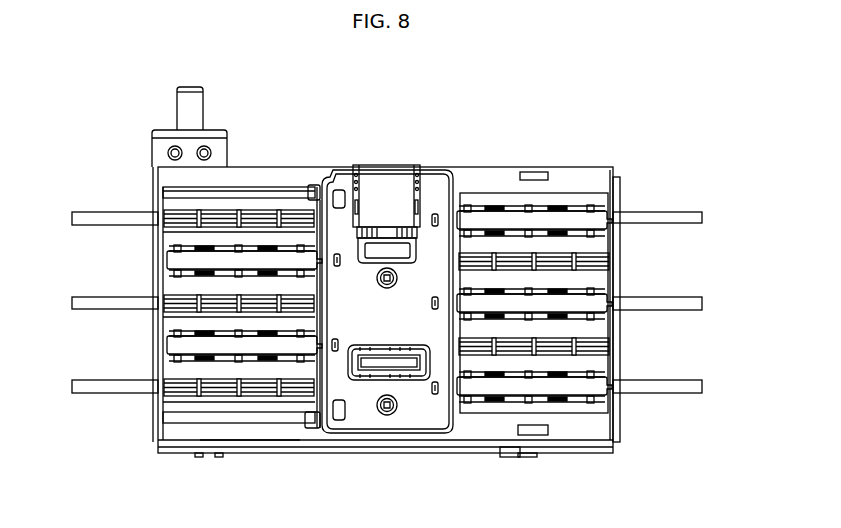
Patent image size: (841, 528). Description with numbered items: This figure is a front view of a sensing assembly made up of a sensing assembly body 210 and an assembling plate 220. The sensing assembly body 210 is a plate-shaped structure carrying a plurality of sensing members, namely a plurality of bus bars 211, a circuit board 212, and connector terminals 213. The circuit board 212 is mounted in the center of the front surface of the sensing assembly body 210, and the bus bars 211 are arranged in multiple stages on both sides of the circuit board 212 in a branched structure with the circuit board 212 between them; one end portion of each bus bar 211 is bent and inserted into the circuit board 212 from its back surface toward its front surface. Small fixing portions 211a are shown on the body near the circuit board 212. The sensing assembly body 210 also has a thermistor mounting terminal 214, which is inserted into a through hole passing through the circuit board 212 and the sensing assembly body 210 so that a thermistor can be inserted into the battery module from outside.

The sensing assembly body 210 is at (503, 128).
The bus bar 211 is at (170, 260).
The fixing clip 211a is at (428, 303).
The circuit board 212 is at (438, 179).
The connector terminal 213 is at (385, 178).
The thermistor mounting terminal 214 is at (403, 370).
The assembling plate 220 is at (103, 214).